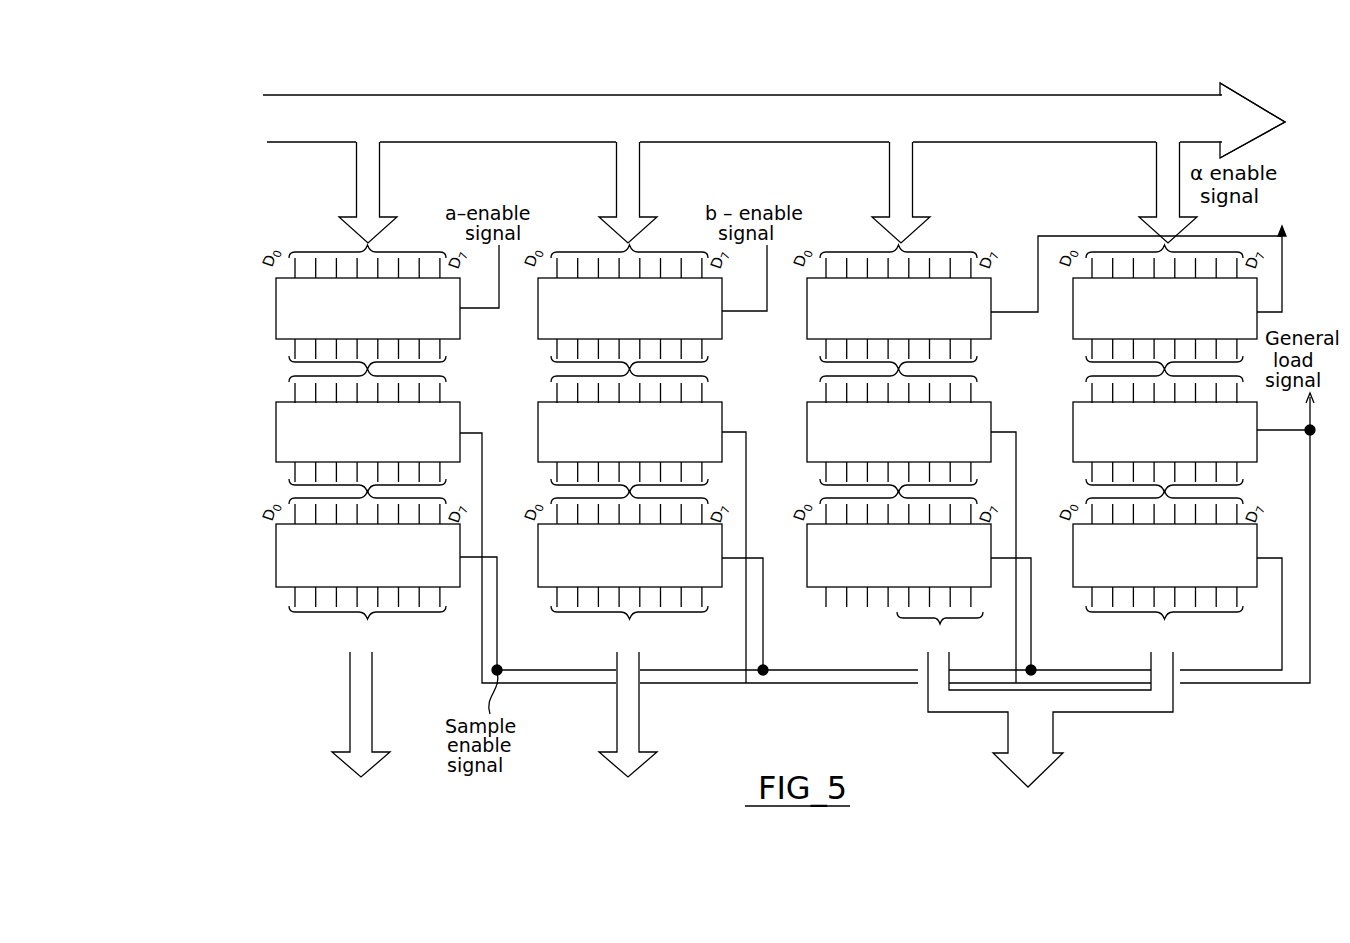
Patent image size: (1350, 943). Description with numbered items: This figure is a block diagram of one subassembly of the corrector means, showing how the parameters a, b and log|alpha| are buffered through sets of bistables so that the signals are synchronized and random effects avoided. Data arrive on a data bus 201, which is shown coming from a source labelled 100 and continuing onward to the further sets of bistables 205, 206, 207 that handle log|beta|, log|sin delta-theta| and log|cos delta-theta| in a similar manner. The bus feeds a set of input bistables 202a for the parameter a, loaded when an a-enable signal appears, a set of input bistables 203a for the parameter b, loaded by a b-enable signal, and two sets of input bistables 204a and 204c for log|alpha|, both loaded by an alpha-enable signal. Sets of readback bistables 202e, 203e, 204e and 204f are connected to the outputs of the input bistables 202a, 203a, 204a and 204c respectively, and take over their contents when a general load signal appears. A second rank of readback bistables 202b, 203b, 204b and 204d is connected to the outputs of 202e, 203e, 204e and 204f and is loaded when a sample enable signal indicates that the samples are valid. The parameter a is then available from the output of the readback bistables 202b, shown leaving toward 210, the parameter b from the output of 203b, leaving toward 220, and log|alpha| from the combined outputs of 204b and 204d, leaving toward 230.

The data bus 201 is at (527, 112).
The processor (source of D0 to D15) 100 is at (647, 167).
The set of input bistables 202a is at (270, 307).
The set of readback bistables 202e is at (270, 433).
The set of readback bistables 202b is at (270, 566).
The set of input bistables 203a is at (533, 326).
The set of readback bistables 203e is at (533, 430).
The set of readback bistables 203b is at (533, 576).
The set of input bistables 204a is at (799, 330).
The set of readback bistables 204e is at (800, 429).
The set of readback bistables 204b is at (800, 597).
The set of input bistables 204c is at (1066, 310).
The set of readback bistables 204f is at (1068, 432).
The set of readback bistables 204d is at (1067, 564).
The set of bistables 205 is at (1273, 108).
The set of bistables 206 is at (1275, 94).
The set of bistables 207 is at (1275, 123).
The destination of a output 210 is at (371, 737).
The destination of b output 220 is at (634, 737).
The destination of Log alpha output 230 is at (1050, 740).